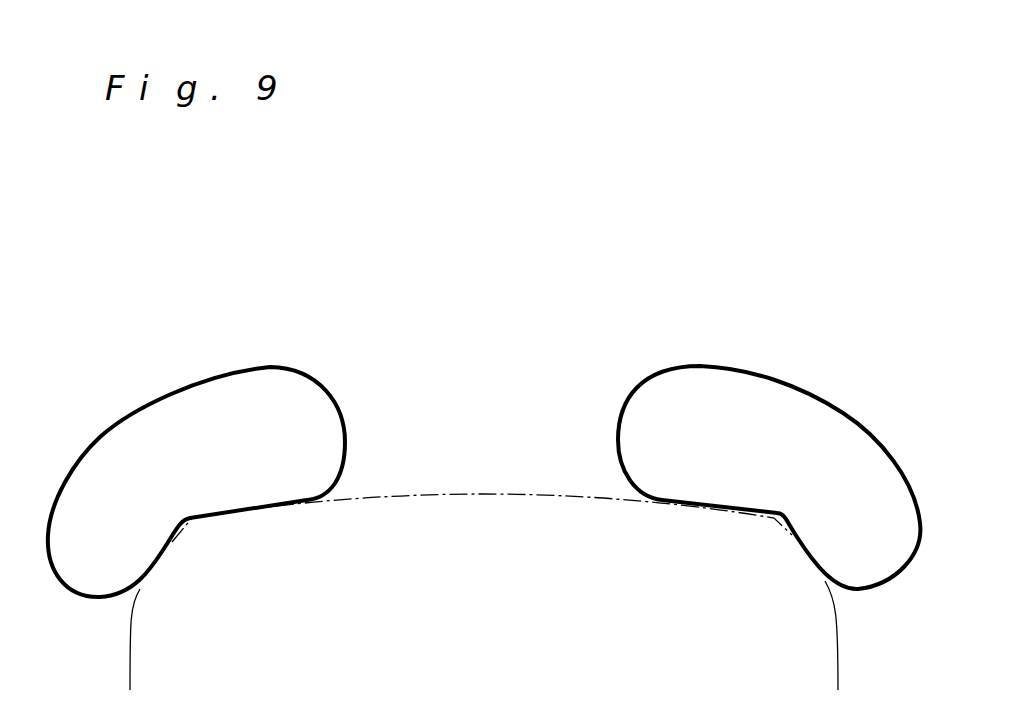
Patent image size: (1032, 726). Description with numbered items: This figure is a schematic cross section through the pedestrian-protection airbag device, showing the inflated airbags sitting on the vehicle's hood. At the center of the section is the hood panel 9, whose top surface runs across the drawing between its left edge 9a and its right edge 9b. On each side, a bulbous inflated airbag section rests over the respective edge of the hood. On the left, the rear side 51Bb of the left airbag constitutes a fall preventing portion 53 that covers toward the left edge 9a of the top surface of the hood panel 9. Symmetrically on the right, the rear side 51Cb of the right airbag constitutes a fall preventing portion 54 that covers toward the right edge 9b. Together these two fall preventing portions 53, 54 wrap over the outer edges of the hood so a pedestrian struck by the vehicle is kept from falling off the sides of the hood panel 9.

The hood panel 9 is at (483, 500).
The left edge of the top surface of the hood panel 9a is at (223, 520).
The right edge of the top surface of the hood panel 9b is at (745, 522).
The fall preventing portion 53 is at (196, 423).
The rear side of the airbag 51B 51Bb is at (217, 377).
The fall preventing portion 54 is at (769, 416).
The rear side of the airbag 51C 51Cb is at (740, 368).